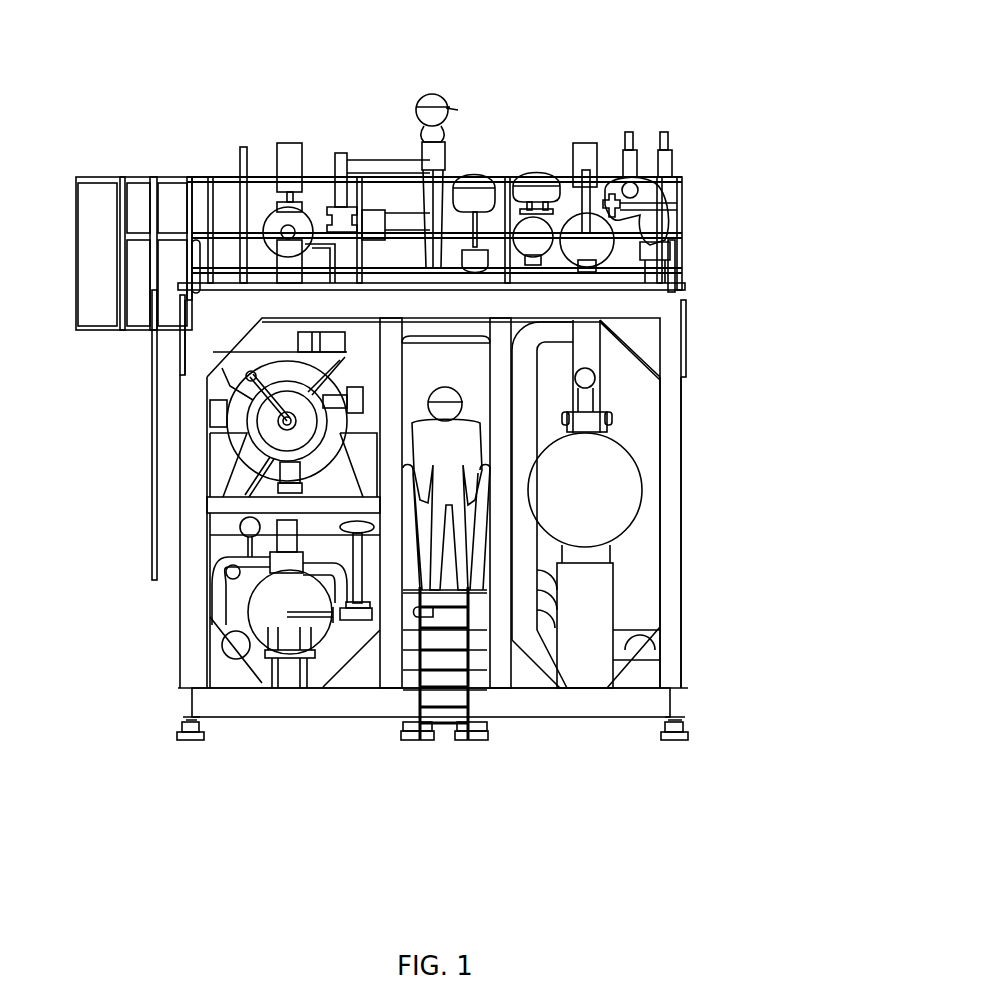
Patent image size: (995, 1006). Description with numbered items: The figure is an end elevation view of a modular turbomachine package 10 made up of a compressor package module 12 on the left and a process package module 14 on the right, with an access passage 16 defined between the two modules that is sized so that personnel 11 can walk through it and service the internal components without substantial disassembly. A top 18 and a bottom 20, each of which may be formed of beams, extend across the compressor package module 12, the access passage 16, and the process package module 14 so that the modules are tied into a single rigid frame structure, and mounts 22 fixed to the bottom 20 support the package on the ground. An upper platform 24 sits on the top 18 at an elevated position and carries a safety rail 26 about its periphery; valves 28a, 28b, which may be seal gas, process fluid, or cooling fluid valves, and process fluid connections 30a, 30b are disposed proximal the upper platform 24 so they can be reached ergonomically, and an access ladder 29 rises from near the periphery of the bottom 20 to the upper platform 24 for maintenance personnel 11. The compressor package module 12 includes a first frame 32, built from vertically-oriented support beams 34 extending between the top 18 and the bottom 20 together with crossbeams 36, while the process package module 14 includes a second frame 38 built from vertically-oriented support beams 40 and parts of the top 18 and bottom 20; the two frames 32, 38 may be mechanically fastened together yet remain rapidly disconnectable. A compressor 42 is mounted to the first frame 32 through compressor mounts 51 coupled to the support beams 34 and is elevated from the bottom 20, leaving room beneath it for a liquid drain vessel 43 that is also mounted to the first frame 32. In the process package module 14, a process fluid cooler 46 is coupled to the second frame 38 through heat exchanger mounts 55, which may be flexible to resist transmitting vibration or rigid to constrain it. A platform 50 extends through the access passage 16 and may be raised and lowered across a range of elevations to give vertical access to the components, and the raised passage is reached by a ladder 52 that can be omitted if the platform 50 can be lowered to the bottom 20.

The turbomachine package 10 is at (728, 35).
The personnel 11 is at (445, 95).
The compressor package module 12 is at (318, 762).
The process package module 14 is at (598, 762).
The access passage 16 is at (437, 758).
The top 18 is at (682, 290).
The bottom 20 is at (667, 707).
The mounts 22 is at (178, 727).
The upper platform 24 is at (230, 290).
The safety rail 26 is at (222, 178).
The valve 28a is at (483, 172).
The valve 28b is at (538, 170).
The access ladder 29 is at (155, 397).
The process fluid connection 30a is at (308, 220).
The process fluid connection 30b is at (597, 210).
The first frame 32 is at (183, 665).
The vertically-oriented support beams 34 is at (193, 598).
The crossbeams 36 is at (217, 508).
The second frame 38 is at (676, 523).
The vertically-oriented support beams 40 is at (672, 405).
The compressor 42 is at (230, 415).
The liquid drain vessel 43 is at (262, 627).
The process fluid cooler 46 is at (627, 487).
The platform 50 is at (465, 607).
The compressor mounts 51 is at (217, 445).
The ladder 52 is at (418, 678).
The heat exchanger mounts 55 is at (602, 625).